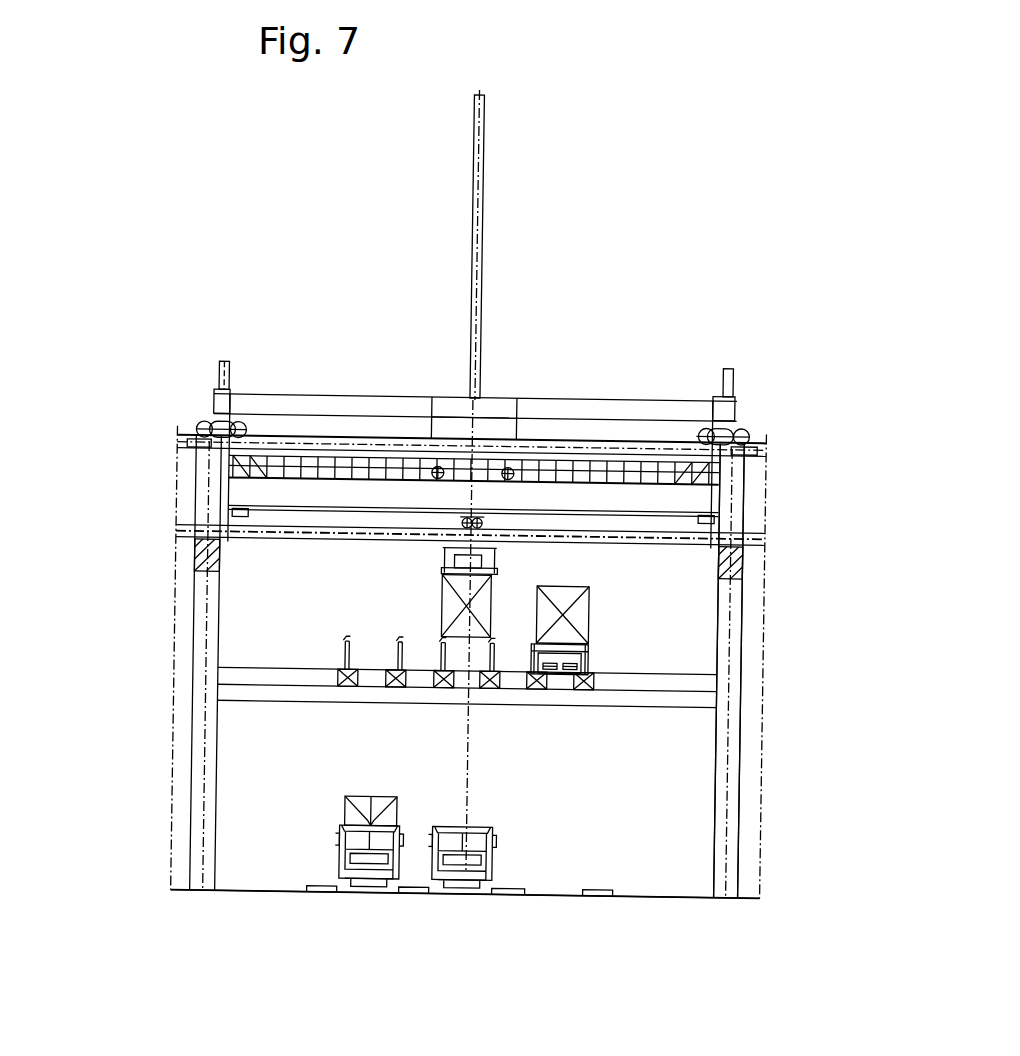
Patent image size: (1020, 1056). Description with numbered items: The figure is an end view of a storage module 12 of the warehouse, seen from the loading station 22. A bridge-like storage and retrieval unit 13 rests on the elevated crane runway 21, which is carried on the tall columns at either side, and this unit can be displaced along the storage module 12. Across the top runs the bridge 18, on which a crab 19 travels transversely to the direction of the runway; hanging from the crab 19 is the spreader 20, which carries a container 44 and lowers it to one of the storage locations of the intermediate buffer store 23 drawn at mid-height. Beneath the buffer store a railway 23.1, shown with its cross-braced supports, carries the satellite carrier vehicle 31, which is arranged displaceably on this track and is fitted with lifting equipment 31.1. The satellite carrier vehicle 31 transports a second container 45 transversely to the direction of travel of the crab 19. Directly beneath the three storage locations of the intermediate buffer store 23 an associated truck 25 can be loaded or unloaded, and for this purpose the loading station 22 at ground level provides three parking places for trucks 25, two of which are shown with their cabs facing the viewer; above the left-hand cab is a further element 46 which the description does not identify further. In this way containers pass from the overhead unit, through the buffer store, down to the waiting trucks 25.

The storage module 12 is at (180, 527).
The storage and retrieval unit 13 is at (457, 386).
The bridge 18 is at (618, 498).
The crab 19 is at (442, 430).
The spreader 20 is at (492, 545).
The crane runway 21 is at (740, 575).
The loading station 22 is at (408, 904).
The intermediate buffer store 23 is at (322, 661).
The railway 23.1 is at (340, 672).
The truck 25 is at (474, 890).
The satellite carrier vehicle 31 is at (590, 673).
The lifting equipment 31.1 is at (588, 648).
The container 44 is at (455, 600).
The container 45 is at (580, 617).
The truck body 46 is at (352, 808).